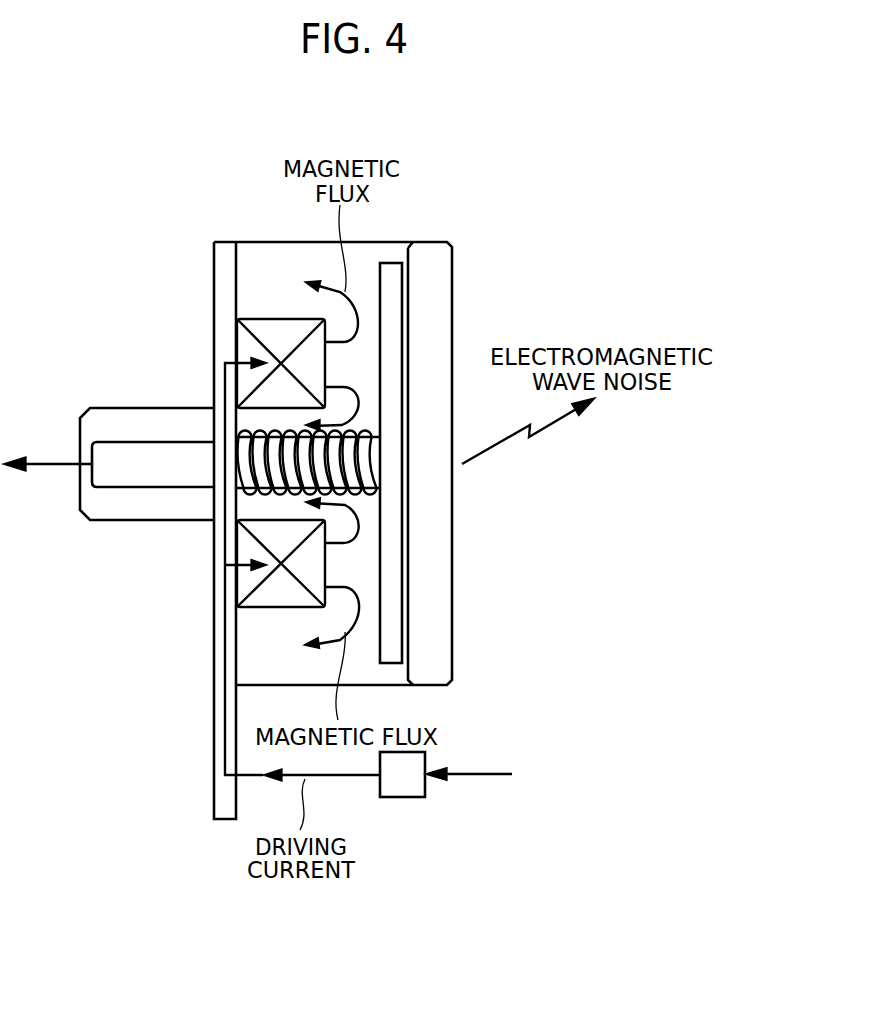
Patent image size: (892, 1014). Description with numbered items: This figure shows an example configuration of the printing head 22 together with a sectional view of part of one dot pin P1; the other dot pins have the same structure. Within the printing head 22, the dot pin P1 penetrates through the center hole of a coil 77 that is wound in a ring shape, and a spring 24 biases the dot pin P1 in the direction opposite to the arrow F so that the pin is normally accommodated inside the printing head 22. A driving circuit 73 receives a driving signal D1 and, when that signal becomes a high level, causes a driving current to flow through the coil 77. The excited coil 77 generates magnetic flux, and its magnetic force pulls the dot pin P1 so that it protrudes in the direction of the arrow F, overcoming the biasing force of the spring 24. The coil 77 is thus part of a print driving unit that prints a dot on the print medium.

The printing head 22 is at (464, 210).
The coil 77 is at (262, 319).
The spring 24 is at (253, 492).
The driving circuit 73 is at (405, 798).
The dot pin P1 is at (140, 440).
The arrow F is at (49, 466).
The driving signal D1 is at (485, 777).